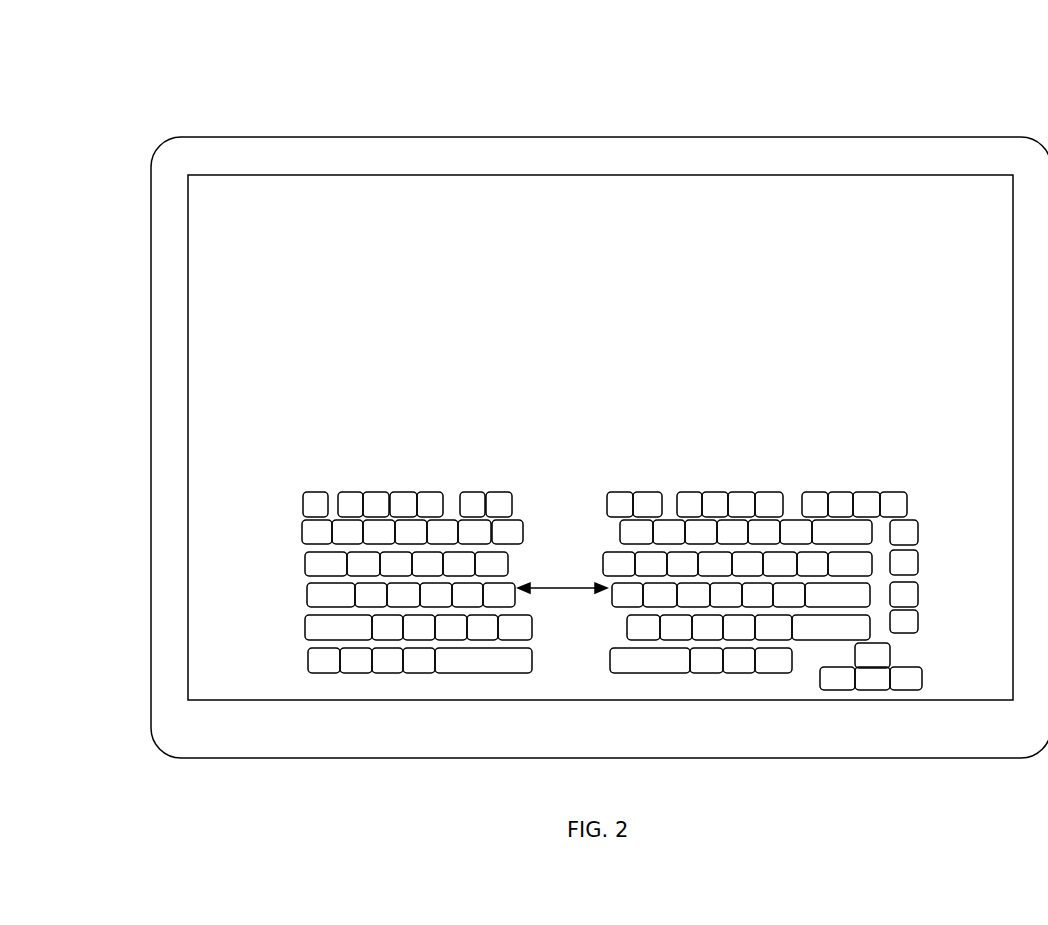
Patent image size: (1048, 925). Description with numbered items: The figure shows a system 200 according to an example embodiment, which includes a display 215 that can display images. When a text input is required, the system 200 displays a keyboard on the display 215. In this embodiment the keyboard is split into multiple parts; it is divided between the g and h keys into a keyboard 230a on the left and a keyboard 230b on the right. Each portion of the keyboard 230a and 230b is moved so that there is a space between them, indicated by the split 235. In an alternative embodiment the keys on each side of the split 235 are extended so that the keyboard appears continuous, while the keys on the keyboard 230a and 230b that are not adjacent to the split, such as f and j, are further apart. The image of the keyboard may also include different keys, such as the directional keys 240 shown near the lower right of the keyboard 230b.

The system 200 is at (198, 106).
The display 215 is at (288, 176).
The keyboard 230a is at (412, 672).
The keyboard 230b is at (678, 670).
The split 235 is at (573, 589).
The directional keys 240 is at (875, 690).